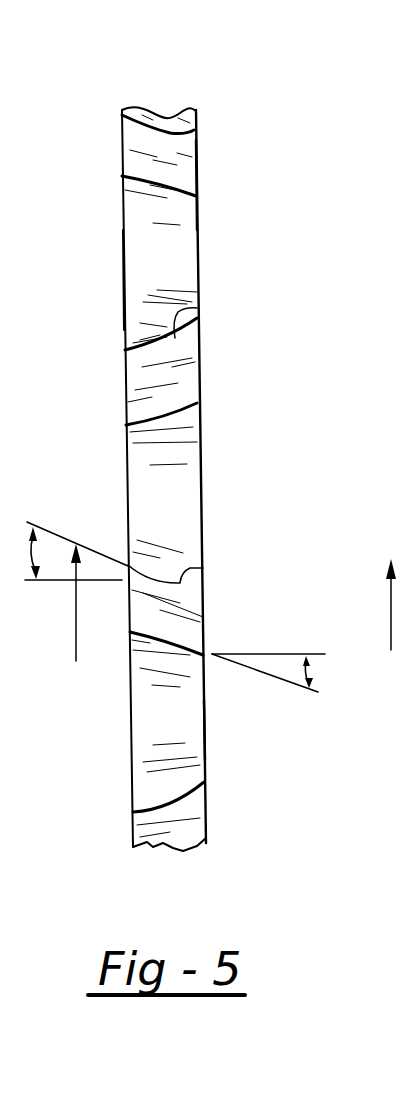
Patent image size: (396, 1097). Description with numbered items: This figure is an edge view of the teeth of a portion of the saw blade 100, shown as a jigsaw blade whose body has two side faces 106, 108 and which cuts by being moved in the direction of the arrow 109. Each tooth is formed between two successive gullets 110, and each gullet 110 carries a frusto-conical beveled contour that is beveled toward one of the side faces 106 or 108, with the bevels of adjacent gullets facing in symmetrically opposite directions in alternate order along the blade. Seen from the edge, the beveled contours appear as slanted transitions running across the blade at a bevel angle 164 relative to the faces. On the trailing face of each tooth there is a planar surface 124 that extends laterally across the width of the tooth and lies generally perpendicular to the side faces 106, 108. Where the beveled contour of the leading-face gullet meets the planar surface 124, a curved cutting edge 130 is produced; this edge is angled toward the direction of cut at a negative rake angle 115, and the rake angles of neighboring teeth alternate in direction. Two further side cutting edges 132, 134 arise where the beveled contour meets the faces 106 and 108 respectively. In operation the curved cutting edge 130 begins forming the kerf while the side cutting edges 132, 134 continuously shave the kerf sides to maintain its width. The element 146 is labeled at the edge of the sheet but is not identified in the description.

The saw blade 100 is at (180, 86).
The side face 106 is at (122, 311).
The side face 108 is at (198, 215).
The arrow 109 is at (73, 590).
The gullet 110 is at (147, 238).
The negative rake angle 115 is at (30, 545).
The planar surface 124 is at (130, 383).
The curved cutting edge 130 is at (200, 306).
The side cutting edge 132 is at (131, 770).
The side cutting edge 134 is at (206, 750).
The adjacent element 146 is at (382, 417).
The bevel angle 164 is at (308, 667).